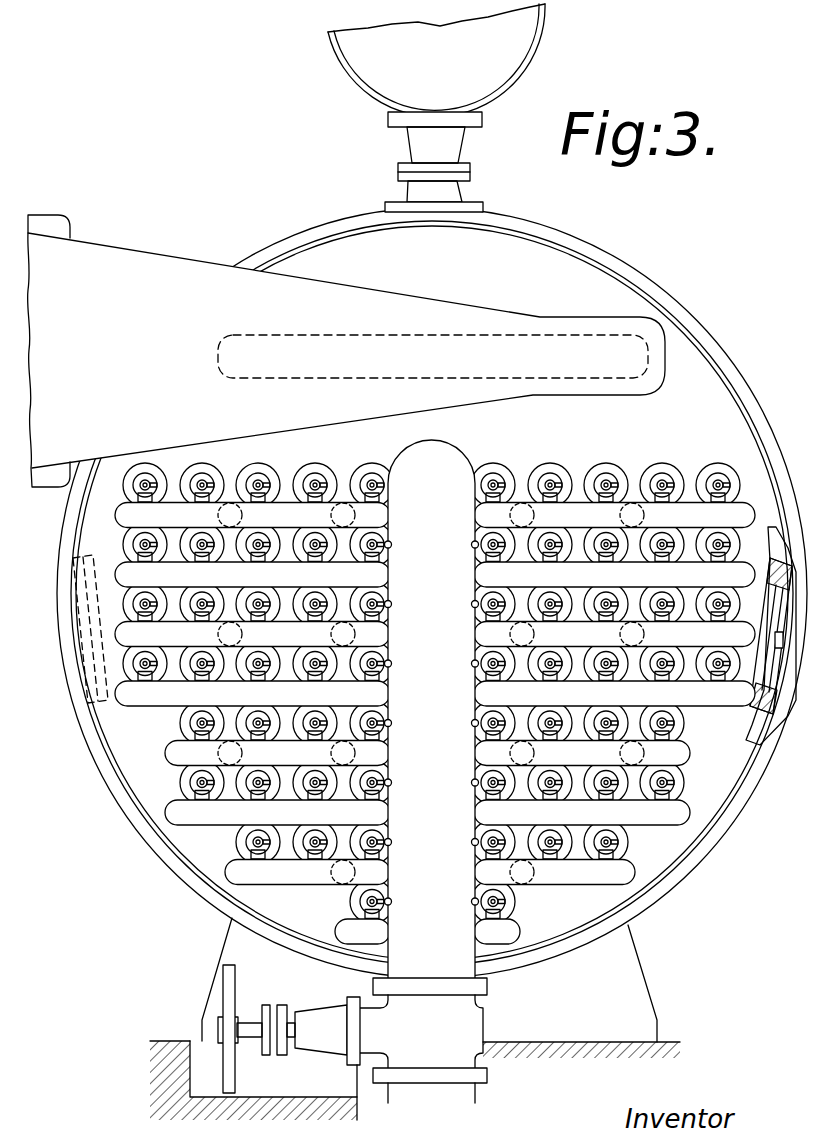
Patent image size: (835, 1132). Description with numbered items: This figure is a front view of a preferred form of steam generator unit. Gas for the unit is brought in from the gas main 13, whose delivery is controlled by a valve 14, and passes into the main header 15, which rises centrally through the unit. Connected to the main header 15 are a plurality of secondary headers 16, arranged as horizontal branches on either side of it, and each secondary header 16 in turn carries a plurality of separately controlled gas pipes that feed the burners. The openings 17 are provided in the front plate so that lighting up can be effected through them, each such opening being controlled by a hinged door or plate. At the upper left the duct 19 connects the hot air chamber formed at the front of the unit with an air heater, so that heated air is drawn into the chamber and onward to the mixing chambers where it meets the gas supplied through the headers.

The gas main 13 is at (430, 1091).
The valve 14 is at (235, 978).
The main header 15 is at (432, 709).
The secondary headers 16 is at (435, 724).
The openings 17 is at (533, 516).
The duct 19 is at (346, 351).